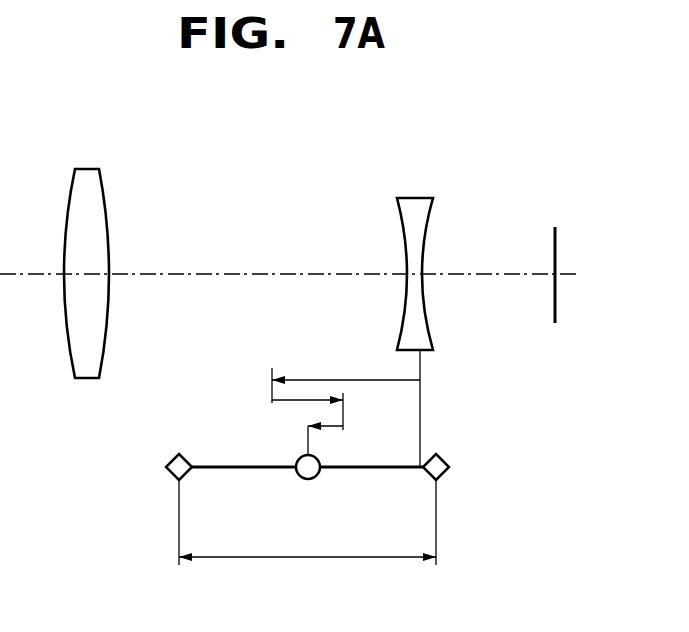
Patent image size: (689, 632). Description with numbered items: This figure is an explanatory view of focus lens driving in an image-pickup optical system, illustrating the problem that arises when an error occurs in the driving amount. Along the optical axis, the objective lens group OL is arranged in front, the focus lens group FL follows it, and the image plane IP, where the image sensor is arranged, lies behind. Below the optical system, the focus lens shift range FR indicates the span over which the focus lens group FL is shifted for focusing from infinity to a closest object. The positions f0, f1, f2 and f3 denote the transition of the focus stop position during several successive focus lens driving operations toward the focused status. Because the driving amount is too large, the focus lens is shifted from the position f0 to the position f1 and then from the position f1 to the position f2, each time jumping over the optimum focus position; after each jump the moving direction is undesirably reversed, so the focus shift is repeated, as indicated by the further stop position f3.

The objective lens group OL is at (86, 168).
The focus lens group FL is at (414, 197).
The image plane IP is at (557, 226).
The focus stop position f0 is at (446, 407).
The focus stop position f1 is at (341, 371).
The focus stop position f2 is at (324, 409).
The focus stop position f3 is at (307, 450).
The focus lens shift range FR is at (307, 509).